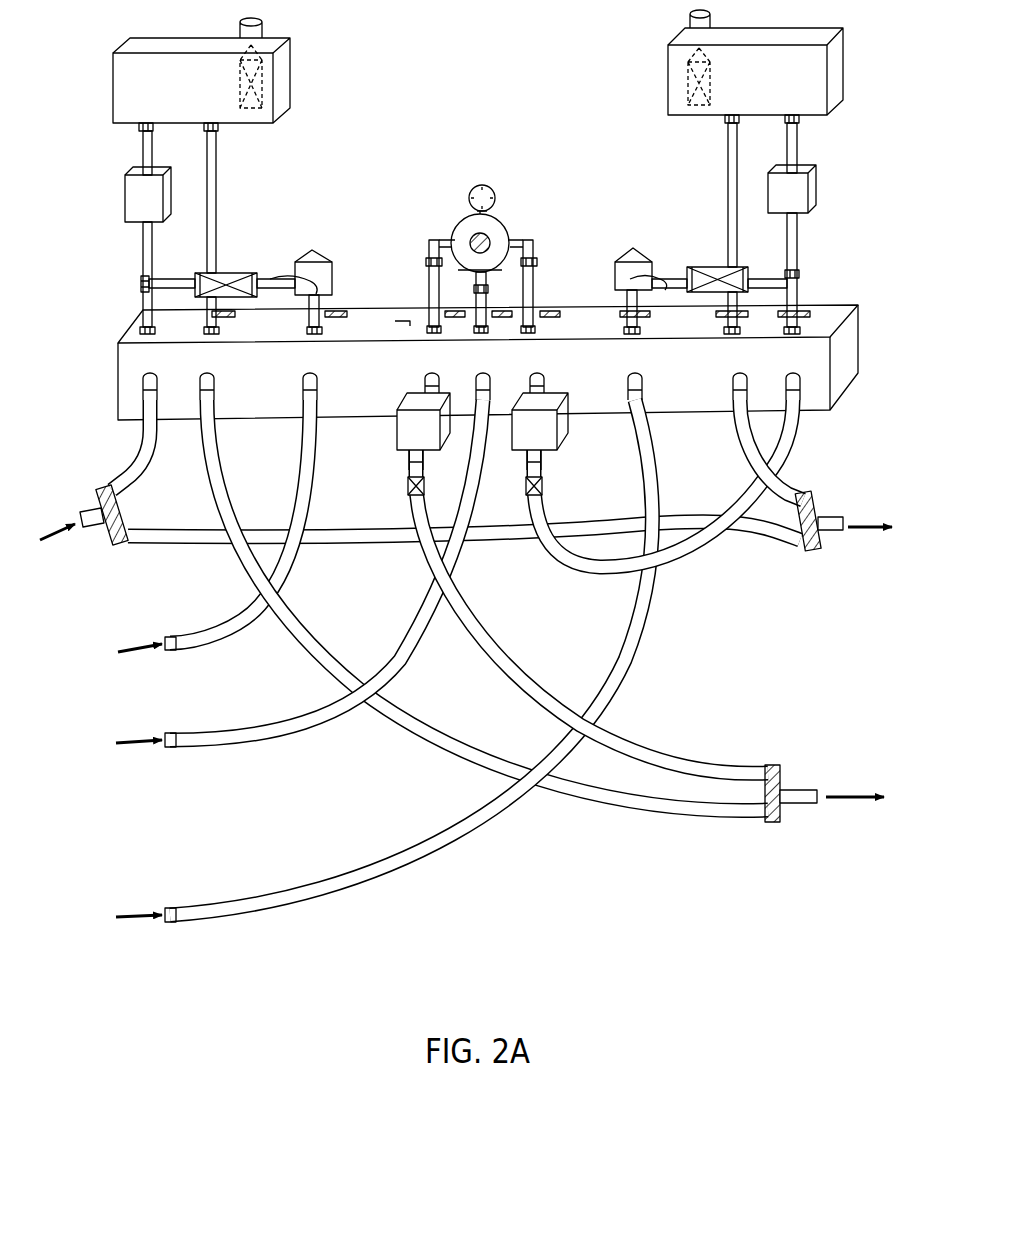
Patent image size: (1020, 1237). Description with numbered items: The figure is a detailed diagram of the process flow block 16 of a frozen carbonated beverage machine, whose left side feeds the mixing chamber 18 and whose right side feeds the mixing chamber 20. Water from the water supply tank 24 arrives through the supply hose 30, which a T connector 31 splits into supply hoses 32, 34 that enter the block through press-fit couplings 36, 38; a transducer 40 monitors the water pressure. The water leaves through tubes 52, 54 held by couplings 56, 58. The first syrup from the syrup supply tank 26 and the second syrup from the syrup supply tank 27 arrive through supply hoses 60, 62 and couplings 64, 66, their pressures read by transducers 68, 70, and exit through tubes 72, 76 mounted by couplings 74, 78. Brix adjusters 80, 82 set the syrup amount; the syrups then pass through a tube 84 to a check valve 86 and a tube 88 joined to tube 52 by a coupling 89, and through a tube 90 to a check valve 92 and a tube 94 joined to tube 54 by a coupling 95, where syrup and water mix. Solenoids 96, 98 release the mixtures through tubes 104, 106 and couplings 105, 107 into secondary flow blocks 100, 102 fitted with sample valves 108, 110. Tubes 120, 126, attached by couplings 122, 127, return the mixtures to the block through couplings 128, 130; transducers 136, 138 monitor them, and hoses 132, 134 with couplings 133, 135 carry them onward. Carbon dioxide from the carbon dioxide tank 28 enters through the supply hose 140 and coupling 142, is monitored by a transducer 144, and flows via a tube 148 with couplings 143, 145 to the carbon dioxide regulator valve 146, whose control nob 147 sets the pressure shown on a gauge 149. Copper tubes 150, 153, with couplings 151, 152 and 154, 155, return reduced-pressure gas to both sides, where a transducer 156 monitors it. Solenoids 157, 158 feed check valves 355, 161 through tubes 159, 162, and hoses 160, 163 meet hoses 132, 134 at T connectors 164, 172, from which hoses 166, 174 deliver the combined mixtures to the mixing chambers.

The process flow block 16 is at (116, 356).
The mixing chamber 18 is at (858, 850).
The mixing chamber 20 is at (857, 471).
The water supply tank 24 is at (68, 569).
The syrup supply tank 26 is at (110, 670).
The syrup supply tank 27 is at (108, 931).
The carbon dioxide tank 28 is at (110, 758).
The supply hose 30 is at (88, 512).
The T connector 31 is at (100, 494).
The supply hose 32 is at (138, 448).
The supply hose 34 is at (176, 543).
The coupling 36 is at (140, 384).
The coupling 38 is at (790, 382).
The transducer 40 is at (786, 308).
The tube 52 is at (148, 308).
The tube 54 is at (798, 240).
The coupling 56 is at (141, 314).
The coupling 58 is at (805, 328).
The supply hose 60 is at (226, 642).
The supply hose 62 is at (222, 915).
The coupling 64 is at (302, 382).
The coupling 66 is at (630, 382).
The transducer 68 is at (335, 312).
The transducer 70 is at (646, 310).
The tube 72 is at (309, 301).
The coupling 74 is at (307, 331).
The tube 76 is at (630, 310).
The coupling 78 is at (640, 332).
The brix adjuster 80 is at (300, 272).
The brix adjuster 82 is at (628, 266).
The tube 84 is at (322, 265).
The check valve 86 is at (228, 283).
The tube 88 is at (178, 278).
The coupling 89 is at (141, 280).
The tube 90 is at (672, 279).
The check valve 92 is at (714, 270).
The tube 94 is at (770, 278).
The coupling 95 is at (800, 275).
The solenoid 96 is at (140, 202).
The solenoid 98 is at (800, 190).
The secondary flow block 100 is at (122, 92).
The secondary flow block 102 is at (840, 50).
The tube 104 is at (143, 158).
The coupling 105 is at (138, 128).
The tube 106 is at (798, 145).
The coupling 107 is at (800, 120).
The sample valve 108 is at (265, 80).
The sample valve 110 is at (690, 72).
The tube 120 is at (216, 215).
The coupling 122 is at (220, 128).
The tube 126 is at (727, 150).
The coupling 127 is at (724, 120).
The coupling 128 is at (205, 334).
The coupling 130 is at (784, 332).
The hose 132 is at (748, 822).
The coupling 133 is at (198, 382).
The hose 134 is at (786, 486).
The coupling 135 is at (734, 382).
The transducer 136 is at (232, 322).
The transducer 138 is at (700, 318).
The supply hose 140 is at (474, 488).
The coupling 142 is at (478, 382).
The coupling 143 is at (440, 326).
The transducer 144 is at (472, 320).
The coupling 145 is at (500, 270).
The CO2 regulator valve 146 is at (490, 180).
The control nob 147 is at (470, 243).
The tube 148 is at (490, 300).
The gauge 149 is at (470, 194).
The copper tube 150 is at (430, 290).
The coupling 151 is at (394, 334).
The coupling 152 is at (428, 262).
The copper tube 153 is at (534, 282).
The coupling 154 is at (532, 262).
The coupling 155 is at (536, 330).
The transducer 156 is at (538, 305).
The solenoid 157 is at (398, 420).
The solenoid 158 is at (558, 414).
The tube 159 is at (408, 464).
The hose 160 is at (408, 520).
The check valve 161 is at (544, 486).
The tube 162 is at (544, 462).
The hose 163 is at (552, 508).
The T connector 164 is at (775, 782).
The hose 166 is at (793, 800).
The T connector 172 is at (806, 552).
The hose 174 is at (832, 532).
The check valve 355 is at (407, 488).